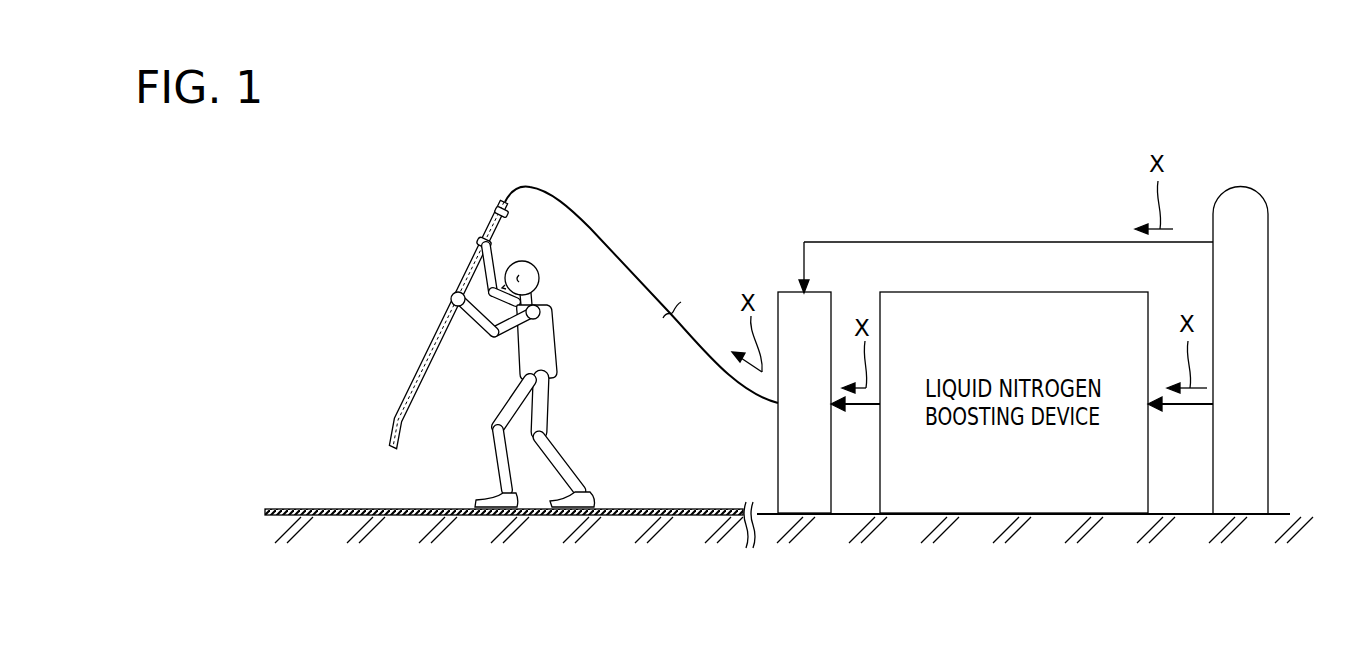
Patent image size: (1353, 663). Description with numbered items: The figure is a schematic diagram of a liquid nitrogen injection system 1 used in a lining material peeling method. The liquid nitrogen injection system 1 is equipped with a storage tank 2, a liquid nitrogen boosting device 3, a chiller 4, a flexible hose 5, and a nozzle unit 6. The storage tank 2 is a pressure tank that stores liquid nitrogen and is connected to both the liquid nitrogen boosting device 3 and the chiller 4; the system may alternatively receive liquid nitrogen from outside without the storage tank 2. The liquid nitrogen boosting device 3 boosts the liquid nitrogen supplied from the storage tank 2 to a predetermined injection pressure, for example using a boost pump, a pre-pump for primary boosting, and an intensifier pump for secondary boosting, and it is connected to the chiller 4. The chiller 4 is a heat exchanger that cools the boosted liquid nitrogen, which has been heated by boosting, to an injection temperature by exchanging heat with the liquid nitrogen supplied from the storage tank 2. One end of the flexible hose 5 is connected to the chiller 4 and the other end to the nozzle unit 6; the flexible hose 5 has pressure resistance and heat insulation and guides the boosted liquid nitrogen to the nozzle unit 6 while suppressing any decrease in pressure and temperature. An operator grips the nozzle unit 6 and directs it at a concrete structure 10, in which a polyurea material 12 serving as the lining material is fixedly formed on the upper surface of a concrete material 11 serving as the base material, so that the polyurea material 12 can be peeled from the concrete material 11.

The liquid nitrogen injection system 1 is at (1264, 118).
The storage tank 2 is at (1268, 322).
The liquid nitrogen boosting device 3 is at (1020, 505).
The chiller 4 is at (790, 297).
The flexible hose 5 is at (628, 265).
The nozzle unit 6 is at (447, 276).
The concrete structure 10 is at (430, 521).
The concrete material 11 is at (272, 530).
The polyurea material 12 is at (265, 512).